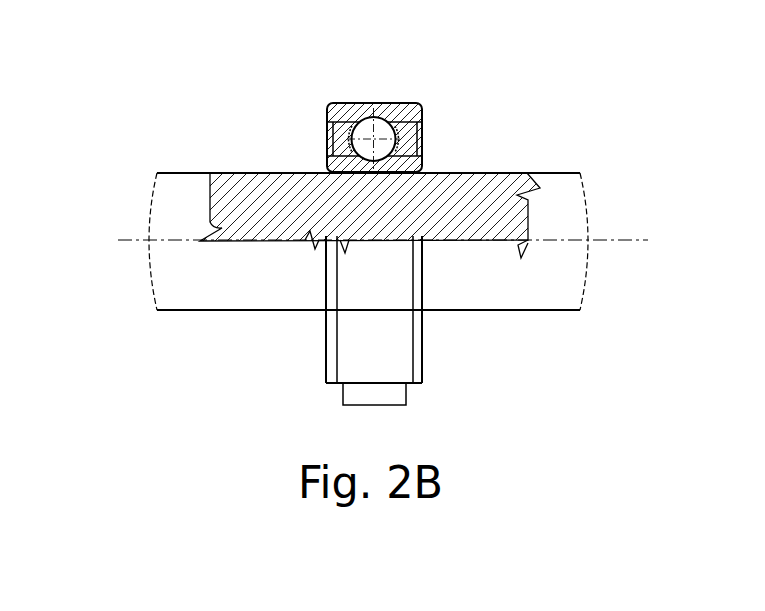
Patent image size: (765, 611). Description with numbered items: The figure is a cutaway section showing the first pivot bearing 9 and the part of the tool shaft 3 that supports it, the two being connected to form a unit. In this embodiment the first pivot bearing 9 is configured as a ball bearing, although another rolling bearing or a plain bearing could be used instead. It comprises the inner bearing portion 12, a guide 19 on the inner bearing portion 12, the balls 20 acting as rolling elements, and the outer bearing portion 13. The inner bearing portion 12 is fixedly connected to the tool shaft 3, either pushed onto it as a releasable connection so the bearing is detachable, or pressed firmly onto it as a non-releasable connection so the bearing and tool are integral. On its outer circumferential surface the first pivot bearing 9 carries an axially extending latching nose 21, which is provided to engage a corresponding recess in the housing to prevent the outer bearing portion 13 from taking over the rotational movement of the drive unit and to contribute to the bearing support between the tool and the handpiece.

The tool shaft 3 is at (247, 312).
The first pivot bearing 9 is at (400, 348).
The inner bearing portion 12 is at (385, 102).
The outer bearing portion 13 is at (365, 110).
The guide 19 is at (330, 162).
The balls 20 is at (380, 142).
The latching nose 21 is at (403, 392).